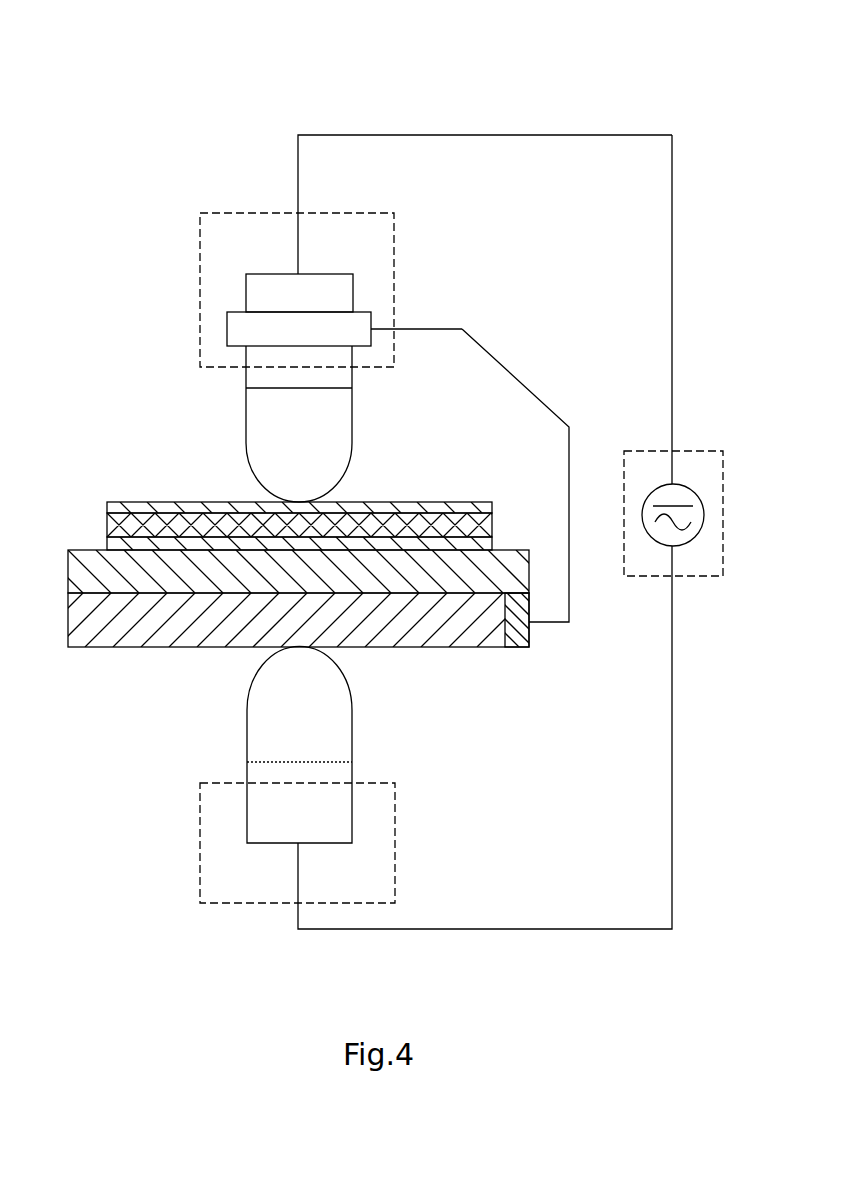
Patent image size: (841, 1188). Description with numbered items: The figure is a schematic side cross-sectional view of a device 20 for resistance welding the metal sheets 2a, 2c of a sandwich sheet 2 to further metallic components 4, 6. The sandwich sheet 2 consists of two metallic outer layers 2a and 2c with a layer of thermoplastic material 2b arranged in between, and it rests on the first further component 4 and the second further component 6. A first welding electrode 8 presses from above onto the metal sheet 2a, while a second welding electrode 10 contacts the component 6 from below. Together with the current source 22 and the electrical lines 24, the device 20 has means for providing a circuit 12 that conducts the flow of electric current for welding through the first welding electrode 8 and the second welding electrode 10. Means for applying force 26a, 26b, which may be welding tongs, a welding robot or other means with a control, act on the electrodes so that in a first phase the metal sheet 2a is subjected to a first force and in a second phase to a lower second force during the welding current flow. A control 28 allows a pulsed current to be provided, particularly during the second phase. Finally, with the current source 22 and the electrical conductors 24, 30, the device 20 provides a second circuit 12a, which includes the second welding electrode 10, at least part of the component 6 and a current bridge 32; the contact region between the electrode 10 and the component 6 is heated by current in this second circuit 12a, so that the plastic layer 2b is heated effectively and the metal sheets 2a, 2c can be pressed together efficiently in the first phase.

The device 20 is at (469, 467).
The circuit 12 is at (623, 120).
The second circuit 12a is at (447, 316).
The electrical lines 24 is at (675, 200).
The means for applying force 26a is at (229, 212).
The means for applying force 26b is at (238, 905).
The first welding electrode 8 is at (333, 430).
The second welding electrode 10 is at (328, 725).
The electrical conductor 30 is at (493, 352).
The current bridge 32 is at (519, 655).
The sandwich sheet 2 is at (280, 472).
The metal sheet 2a is at (130, 500).
The layer of thermoplastic material 2b is at (104, 518).
The metal sheet 2c is at (104, 545).
The first further component 4 is at (84, 578).
The second further component 6 is at (84, 620).
The current source 22 is at (662, 483).
The control 28 is at (677, 484).